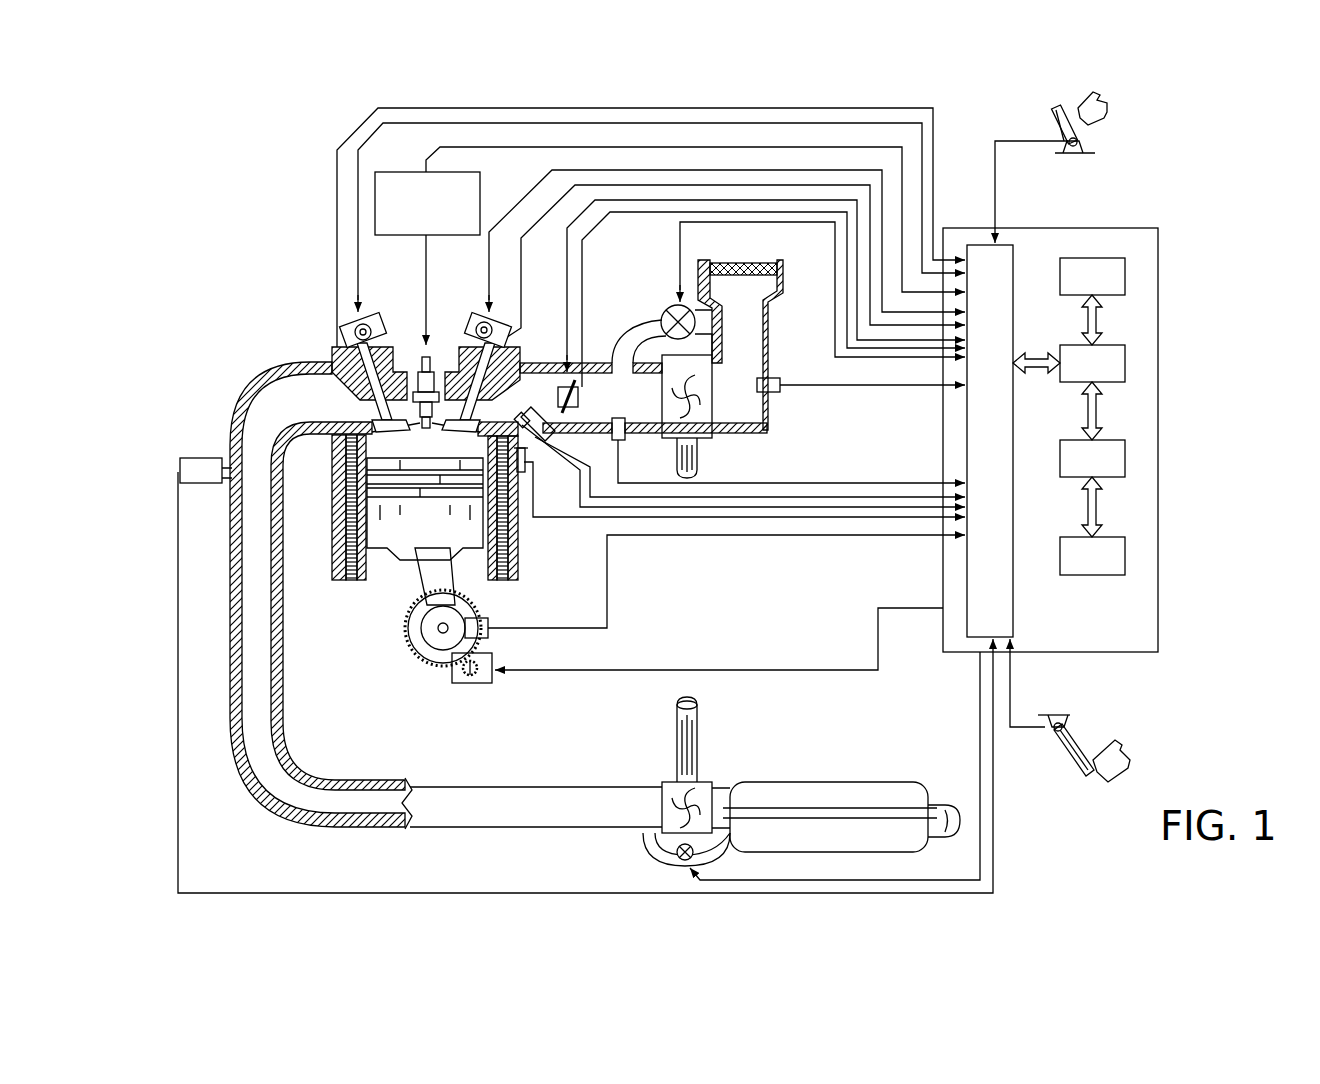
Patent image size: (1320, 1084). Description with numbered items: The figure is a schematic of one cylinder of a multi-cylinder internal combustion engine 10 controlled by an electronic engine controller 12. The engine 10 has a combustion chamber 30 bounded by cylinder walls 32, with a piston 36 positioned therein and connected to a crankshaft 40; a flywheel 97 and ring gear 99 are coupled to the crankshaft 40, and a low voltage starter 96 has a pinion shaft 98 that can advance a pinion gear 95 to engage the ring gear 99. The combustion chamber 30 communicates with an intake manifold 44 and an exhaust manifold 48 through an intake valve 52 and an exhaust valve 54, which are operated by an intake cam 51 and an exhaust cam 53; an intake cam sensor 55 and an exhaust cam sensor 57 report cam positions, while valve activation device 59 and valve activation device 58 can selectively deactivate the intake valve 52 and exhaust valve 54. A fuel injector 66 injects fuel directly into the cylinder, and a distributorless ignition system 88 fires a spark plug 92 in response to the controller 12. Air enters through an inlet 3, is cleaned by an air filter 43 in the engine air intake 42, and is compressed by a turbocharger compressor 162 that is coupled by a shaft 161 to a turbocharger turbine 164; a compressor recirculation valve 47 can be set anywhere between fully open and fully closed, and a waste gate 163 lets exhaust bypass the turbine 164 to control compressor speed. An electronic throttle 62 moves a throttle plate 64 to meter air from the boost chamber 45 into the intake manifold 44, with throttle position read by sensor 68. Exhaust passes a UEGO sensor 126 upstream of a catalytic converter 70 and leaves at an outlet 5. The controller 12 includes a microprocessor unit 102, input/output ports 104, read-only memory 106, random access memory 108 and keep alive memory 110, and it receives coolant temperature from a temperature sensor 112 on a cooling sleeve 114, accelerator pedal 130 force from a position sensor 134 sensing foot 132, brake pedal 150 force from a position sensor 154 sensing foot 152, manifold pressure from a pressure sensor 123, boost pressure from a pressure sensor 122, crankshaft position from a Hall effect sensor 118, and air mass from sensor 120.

The inlet 3 is at (748, 262).
The outlet 5 is at (950, 800).
The internal combustion engine 10 is at (268, 300).
The electronic engine controller 12 is at (1158, 228).
The combustion chamber 30 is at (346, 542).
The cylinder walls 32 is at (372, 575).
The piston 36 is at (410, 535).
The crankshaft 40 is at (433, 648).
The engine air intake 42 is at (668, 298).
The air filter 43 is at (733, 278).
The intake manifold 44 is at (546, 403).
The boost chamber 45 is at (641, 409).
The compressor recirculation valve 47 is at (665, 310).
The exhaust manifold 48 is at (317, 418).
The intake cam 51 is at (478, 323).
The intake valve 52 is at (465, 405).
The exhaust cam 53 is at (357, 302).
The exhaust valve 54 is at (378, 403).
The intake cam sensor 55 is at (481, 300).
The exhaust cam sensor 57 is at (352, 337).
The valve activation device 58 is at (380, 332).
The valve activation device 59 is at (480, 345).
The electronic throttle 62 is at (578, 398).
The throttle plate 64 is at (572, 408).
The fuel injector 66 is at (525, 460).
The throttle position sensor 68 is at (612, 363).
The catalytic converter 70 is at (765, 782).
The distributorless ignition system 88 is at (393, 172).
The spark plug 92 is at (433, 350).
The pinion gear 95 is at (483, 683).
The starter 96 is at (476, 689).
The flywheel 97 is at (425, 628).
The pinion shaft 98 is at (470, 682).
The ring gear 99 is at (443, 665).
The microprocessor unit 102 is at (1125, 357).
The input/output ports 104 is at (1013, 255).
The read-only memory 106 is at (1125, 272).
The random access memory 108 is at (1125, 455).
The keep alive memory 110 is at (1125, 552).
The temperature sensor 112 is at (533, 490).
The cooling sleeve 114 is at (516, 545).
The Hall effect sensor 118 is at (489, 618).
The air mass sensor 120 is at (780, 382).
The pressure sensor 122 is at (622, 440).
The pressure sensor 123 is at (548, 433).
The Universal Exhaust Gas Oxygen sensor 126 is at (180, 468).
The accelerator pedal 130 is at (1109, 155).
The foot 132 is at (1102, 108).
The position sensor 134 is at (1090, 147).
The brake pedal 150 is at (1070, 718).
The foot 152 is at (1105, 745).
The position sensor 154 is at (1050, 727).
The shaft 161 is at (697, 455).
The turbocharger compressor 162 is at (712, 425).
The waste gate 163 is at (680, 858).
The turbocharger turbine 164 is at (662, 785).